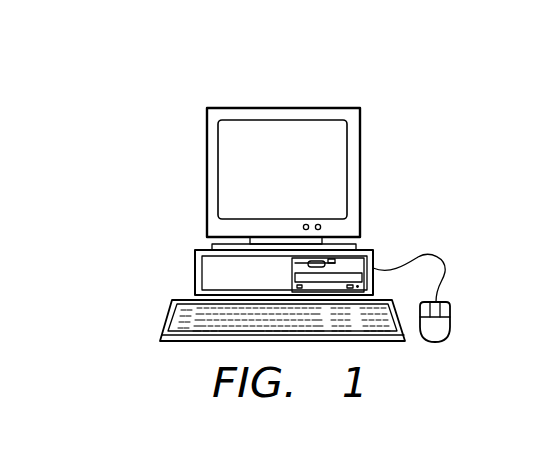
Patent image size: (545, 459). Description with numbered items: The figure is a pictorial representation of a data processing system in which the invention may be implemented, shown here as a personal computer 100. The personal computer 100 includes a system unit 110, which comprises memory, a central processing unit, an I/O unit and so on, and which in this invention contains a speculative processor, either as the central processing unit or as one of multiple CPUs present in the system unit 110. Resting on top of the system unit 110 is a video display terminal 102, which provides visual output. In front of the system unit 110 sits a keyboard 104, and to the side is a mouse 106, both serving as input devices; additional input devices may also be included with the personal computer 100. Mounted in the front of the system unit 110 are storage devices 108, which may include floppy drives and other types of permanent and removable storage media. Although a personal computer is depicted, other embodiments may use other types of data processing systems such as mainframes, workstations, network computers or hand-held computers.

The personal computer 100 is at (307, 77).
The video display terminal 102 is at (206, 173).
The keyboard 104 is at (167, 318).
The mouse 106 is at (450, 318).
The storage devices 108 is at (337, 263).
The system unit 110 is at (196, 275).